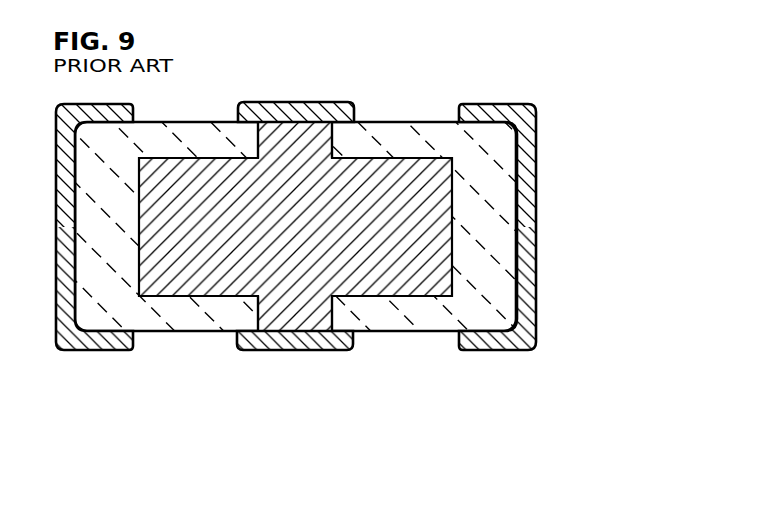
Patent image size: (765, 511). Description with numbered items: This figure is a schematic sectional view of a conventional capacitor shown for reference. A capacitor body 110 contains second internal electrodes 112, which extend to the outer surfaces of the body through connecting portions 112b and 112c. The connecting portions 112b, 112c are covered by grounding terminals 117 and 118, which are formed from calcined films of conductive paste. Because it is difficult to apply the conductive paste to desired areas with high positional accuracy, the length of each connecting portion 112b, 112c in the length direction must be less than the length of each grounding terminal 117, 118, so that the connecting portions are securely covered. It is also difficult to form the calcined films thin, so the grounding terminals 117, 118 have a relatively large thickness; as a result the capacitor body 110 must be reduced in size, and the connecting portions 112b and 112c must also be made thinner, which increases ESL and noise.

The capacitor body 110 is at (516, 175).
The second internal electrodes 112 is at (452, 252).
The connecting portion 112b is at (332, 140).
The connecting portion 112c is at (333, 315).
The grounding terminal 117 is at (282, 102).
The grounding terminal 118 is at (300, 352).